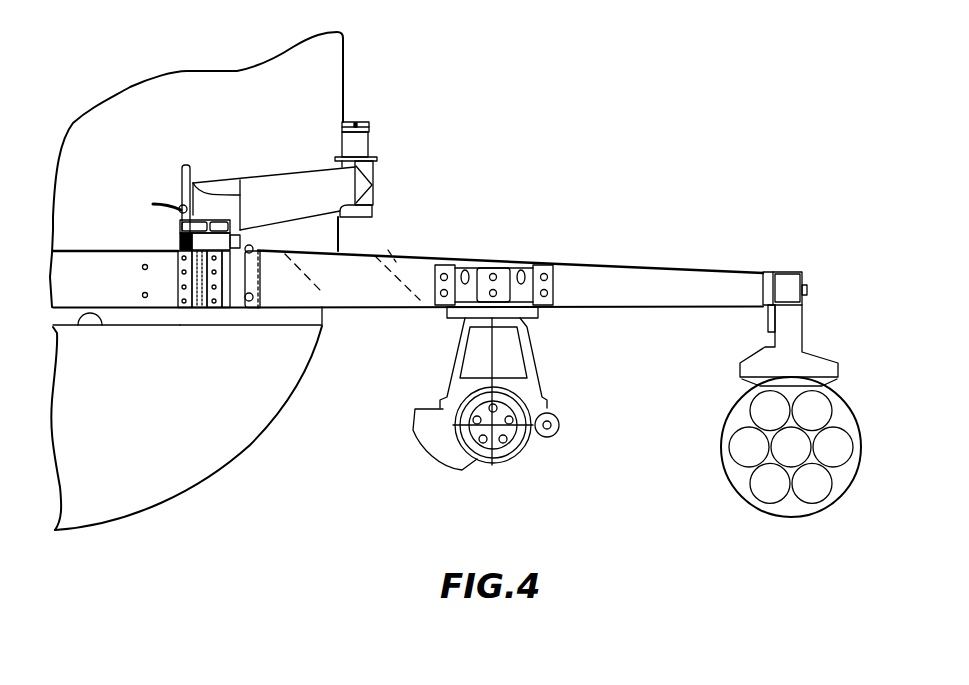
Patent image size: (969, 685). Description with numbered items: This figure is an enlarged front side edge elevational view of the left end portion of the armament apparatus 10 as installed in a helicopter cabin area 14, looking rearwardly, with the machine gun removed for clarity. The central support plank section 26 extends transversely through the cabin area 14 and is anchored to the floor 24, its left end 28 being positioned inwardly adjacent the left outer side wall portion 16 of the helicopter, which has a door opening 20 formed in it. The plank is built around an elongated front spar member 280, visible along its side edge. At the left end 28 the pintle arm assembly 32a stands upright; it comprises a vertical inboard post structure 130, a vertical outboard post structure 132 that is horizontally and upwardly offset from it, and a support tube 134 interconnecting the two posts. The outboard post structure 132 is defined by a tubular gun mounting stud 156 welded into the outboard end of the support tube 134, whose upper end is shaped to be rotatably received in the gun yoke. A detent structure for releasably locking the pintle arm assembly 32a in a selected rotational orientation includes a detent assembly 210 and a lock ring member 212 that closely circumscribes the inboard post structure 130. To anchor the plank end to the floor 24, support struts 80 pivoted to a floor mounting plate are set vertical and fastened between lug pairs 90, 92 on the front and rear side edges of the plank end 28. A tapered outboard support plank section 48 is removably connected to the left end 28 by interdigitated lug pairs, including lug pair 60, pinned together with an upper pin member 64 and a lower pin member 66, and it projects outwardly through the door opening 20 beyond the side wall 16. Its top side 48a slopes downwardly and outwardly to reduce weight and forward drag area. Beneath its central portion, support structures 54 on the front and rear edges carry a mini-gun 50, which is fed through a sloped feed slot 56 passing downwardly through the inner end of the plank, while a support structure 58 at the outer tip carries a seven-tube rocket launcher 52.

The armament apparatus 10 is at (172, 94).
The cabin area 14 is at (98, 148).
The left outer side wall portion 16 is at (345, 50).
The door opening 20 is at (327, 76).
The floor 24 is at (78, 327).
The central support plank section 26 is at (121, 316).
The left end 28 is at (228, 316).
The pintle arm assembly 32a is at (384, 182).
The outboard support plank section 48 is at (671, 314).
The top side 48a is at (600, 262).
The mini-gun 50 is at (433, 457).
The rocket launcher 52 is at (745, 507).
The support structures 54 is at (447, 262).
The sloped feed slot 56 is at (388, 253).
The support structure 58 is at (803, 332).
The lug pair 60 is at (250, 277).
The upper pin member 64 is at (256, 249).
The lower pin member 66 is at (248, 302).
The support struts 80 is at (198, 310).
The lug pair 90 is at (217, 270).
The lug pair 92 is at (213, 276).
The inboard post structure 130 is at (213, 173).
The outboard post structure 132 is at (380, 137).
The support tube 134 is at (325, 170).
The tubular gun mounting stud 156 is at (342, 140).
The detent assembly 210 is at (163, 177).
The lock ring member 212 is at (174, 240).
The front spar member 280 is at (103, 300).